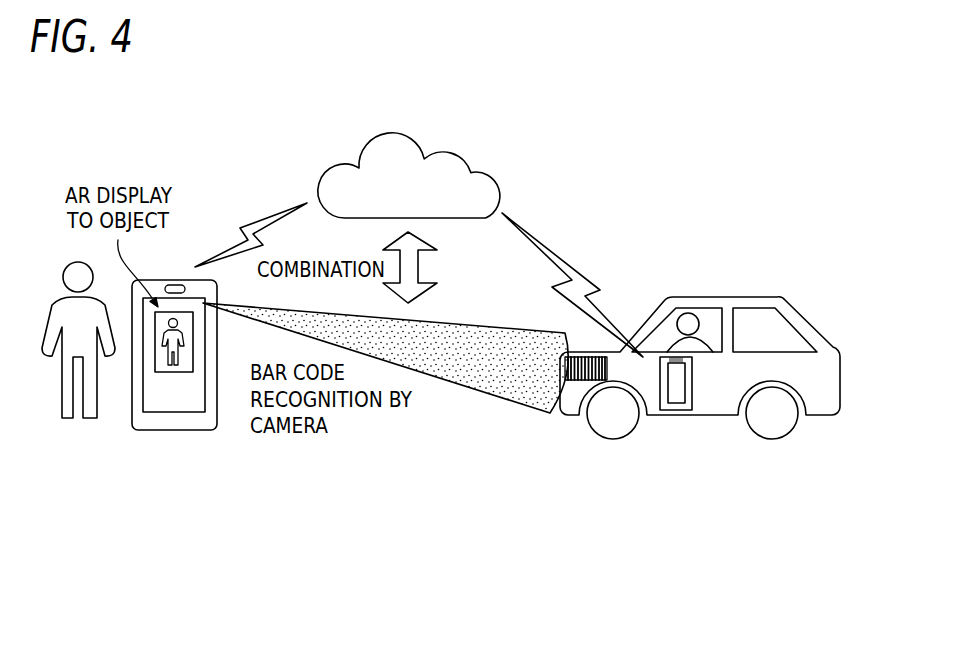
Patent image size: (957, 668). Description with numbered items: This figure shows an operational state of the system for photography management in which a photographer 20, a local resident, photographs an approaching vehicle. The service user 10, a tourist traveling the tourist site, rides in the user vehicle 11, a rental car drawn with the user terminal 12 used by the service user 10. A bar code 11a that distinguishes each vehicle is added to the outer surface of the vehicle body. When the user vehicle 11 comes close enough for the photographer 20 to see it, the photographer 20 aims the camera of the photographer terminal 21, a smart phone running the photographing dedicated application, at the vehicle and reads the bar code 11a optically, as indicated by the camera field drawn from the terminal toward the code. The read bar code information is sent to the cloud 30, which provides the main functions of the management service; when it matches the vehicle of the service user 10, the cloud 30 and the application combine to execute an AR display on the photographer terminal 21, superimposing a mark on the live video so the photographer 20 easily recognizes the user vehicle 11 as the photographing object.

The service user 10 is at (670, 298).
The user vehicle 11 is at (728, 297).
The bar code 11a is at (570, 393).
The user terminal 12 is at (678, 415).
The photographer 20 is at (92, 418).
The photographer terminal 21 is at (173, 430).
The cloud 30 is at (448, 147).